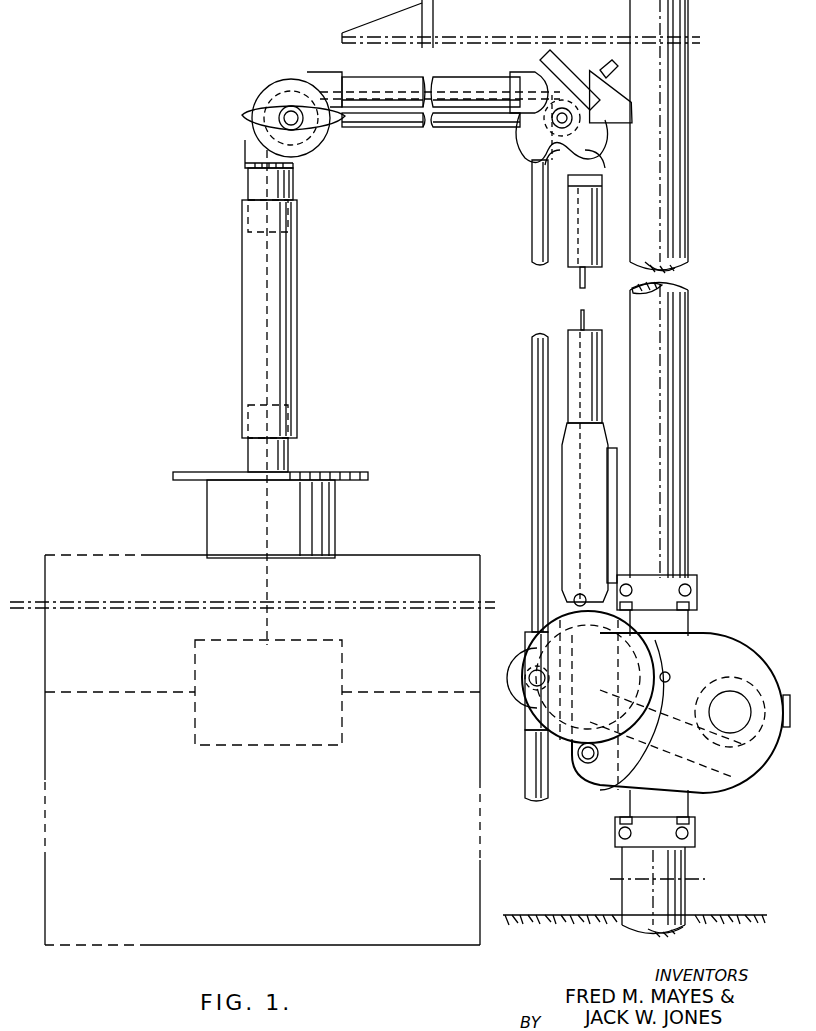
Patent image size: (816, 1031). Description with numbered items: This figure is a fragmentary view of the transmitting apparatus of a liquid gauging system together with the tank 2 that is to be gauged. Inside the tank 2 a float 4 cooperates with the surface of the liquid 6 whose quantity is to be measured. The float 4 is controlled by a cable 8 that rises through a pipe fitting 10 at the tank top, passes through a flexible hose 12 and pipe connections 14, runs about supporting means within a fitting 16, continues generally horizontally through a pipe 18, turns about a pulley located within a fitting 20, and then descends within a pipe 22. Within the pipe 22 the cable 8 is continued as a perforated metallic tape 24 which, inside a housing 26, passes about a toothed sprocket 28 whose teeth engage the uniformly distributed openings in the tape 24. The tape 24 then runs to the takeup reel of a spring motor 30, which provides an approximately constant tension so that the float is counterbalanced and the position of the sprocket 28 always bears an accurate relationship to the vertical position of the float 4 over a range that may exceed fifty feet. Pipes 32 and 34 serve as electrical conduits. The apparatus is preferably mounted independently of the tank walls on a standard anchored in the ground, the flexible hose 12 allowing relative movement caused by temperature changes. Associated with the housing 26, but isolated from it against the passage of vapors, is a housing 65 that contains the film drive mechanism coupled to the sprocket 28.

The tank 2 is at (405, 557).
The float 4 is at (343, 658).
The liquid 6 is at (405, 690).
The cable 8 is at (292, 318).
The pipe fitting 10 is at (291, 455).
The flexible hose 12 is at (290, 378).
The pipe connections 14 is at (293, 186).
The fitting 16 is at (269, 94).
The pipe 18 is at (380, 80).
The fitting 20 is at (549, 78).
The pipe 22 is at (600, 214).
The perforated metallic tape 24 is at (588, 320).
The housing 26 is at (720, 637).
The toothed sprocket 28 is at (580, 700).
The spring motor 30 is at (753, 743).
The pipe 32 is at (531, 552).
The pipe 34 is at (526, 778).
The housing 65 is at (531, 604).